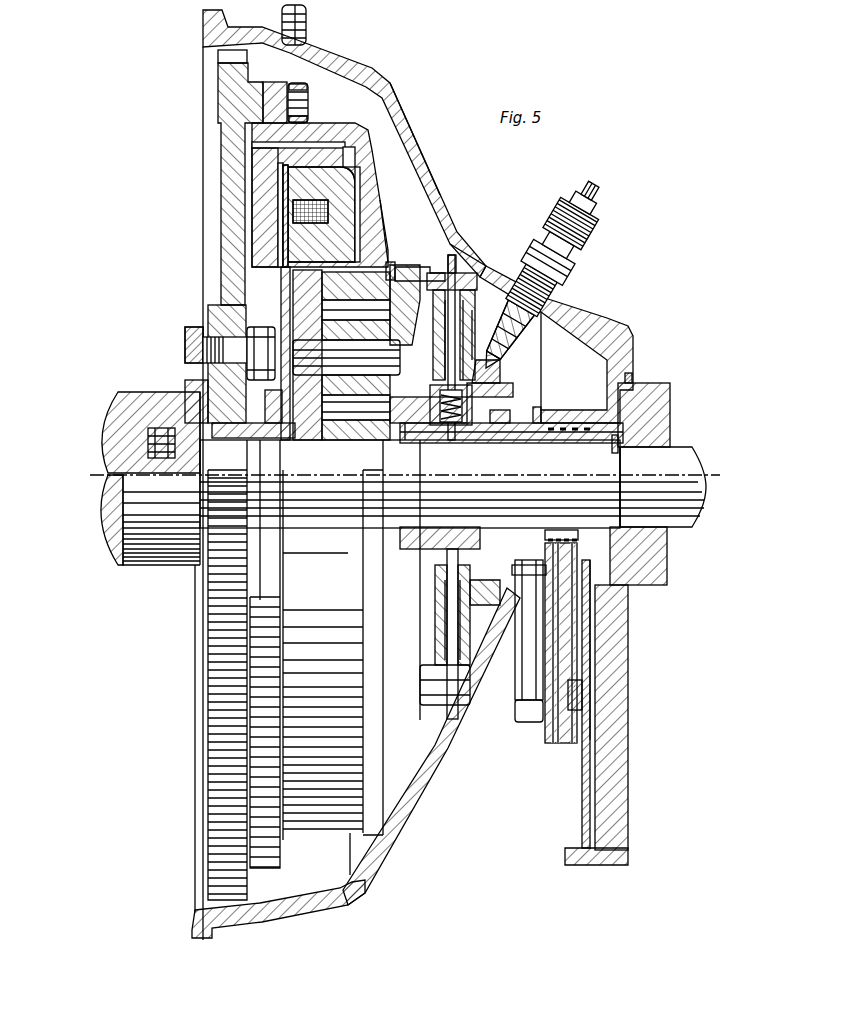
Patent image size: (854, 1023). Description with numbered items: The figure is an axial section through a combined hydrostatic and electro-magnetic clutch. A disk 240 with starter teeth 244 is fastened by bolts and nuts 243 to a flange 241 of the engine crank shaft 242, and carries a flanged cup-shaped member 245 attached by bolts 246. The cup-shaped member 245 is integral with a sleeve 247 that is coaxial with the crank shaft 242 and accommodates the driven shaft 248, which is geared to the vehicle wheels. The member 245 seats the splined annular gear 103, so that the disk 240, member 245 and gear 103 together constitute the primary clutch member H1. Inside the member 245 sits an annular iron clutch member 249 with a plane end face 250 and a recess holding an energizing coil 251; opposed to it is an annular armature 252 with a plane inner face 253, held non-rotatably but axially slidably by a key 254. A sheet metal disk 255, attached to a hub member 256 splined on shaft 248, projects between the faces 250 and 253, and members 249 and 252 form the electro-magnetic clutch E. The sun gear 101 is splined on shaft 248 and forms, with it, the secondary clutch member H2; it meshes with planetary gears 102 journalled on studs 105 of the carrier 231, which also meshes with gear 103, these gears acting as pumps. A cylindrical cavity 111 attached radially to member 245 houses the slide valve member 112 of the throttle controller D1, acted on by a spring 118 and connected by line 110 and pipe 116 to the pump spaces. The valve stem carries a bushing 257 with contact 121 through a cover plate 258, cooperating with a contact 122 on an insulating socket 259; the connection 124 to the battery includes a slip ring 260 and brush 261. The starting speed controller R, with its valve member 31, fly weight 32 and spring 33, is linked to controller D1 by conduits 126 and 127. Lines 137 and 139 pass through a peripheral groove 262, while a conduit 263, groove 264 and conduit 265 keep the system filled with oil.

The teeth 244 is at (222, 58).
The disk 240 is at (222, 84).
The key 254 is at (260, 145).
The energizing coil 251 is at (295, 210).
The annular armature 252 is at (265, 226).
The plane inner face 253 is at (286, 245).
The sheet metal disk 255 is at (283, 266).
The flange 241 is at (222, 330).
The bolts and nuts 243 is at (200, 347).
The crank shaft 242 is at (150, 400).
The hub member 256 is at (215, 425).
The bolts 246 is at (300, 83).
The plane end face 250 is at (300, 175).
The annular clutch member 249 is at (390, 75).
The flanged cup-shaped member 245 is at (405, 105).
The insulating socket 259 is at (436, 213).
The bushing 257 is at (466, 250).
The cover plate 258 is at (478, 268).
The conductor 124 is at (582, 200).
The electromagnetic clutch E is at (368, 182).
The primary clutch member H1 is at (386, 222).
The stationary contact 122 is at (391, 262).
The electrical contact 121 is at (424, 267).
The internally toothed ring 103 is at (305, 290).
The planetary gear 102 is at (340, 318).
The studs 105 is at (335, 345).
The line 110 is at (405, 353).
The planetary gear carrier 231 is at (322, 410).
The pipe 116 is at (372, 442).
The cylindrical cavity 111 is at (468, 300).
The helical spring 118 is at (470, 316).
The throttle controller D1 is at (470, 333).
The conduit 126 is at (417, 530).
The brush 261 is at (492, 374).
The slide valve member 112 is at (494, 380).
The conduit 265 is at (492, 443).
The sun gear 101 is at (340, 442).
The conduit 127 is at (405, 450).
The peripheral groove 264 is at (640, 400).
The secondary clutch member H2 is at (670, 455).
The driven shaft 248 is at (692, 455).
The sleeve 247 is at (655, 542).
The peripheral groove 262 is at (578, 530).
The conduit 263 is at (592, 760).
The suction pipe 139 is at (556, 640).
The pressure pipe 137 is at (578, 668).
The slip ring 260 is at (492, 588).
The valve member 31 is at (476, 600).
The starting speed controller R is at (472, 608).
The spring 33 is at (466, 650).
The fly weight 32 is at (436, 672).